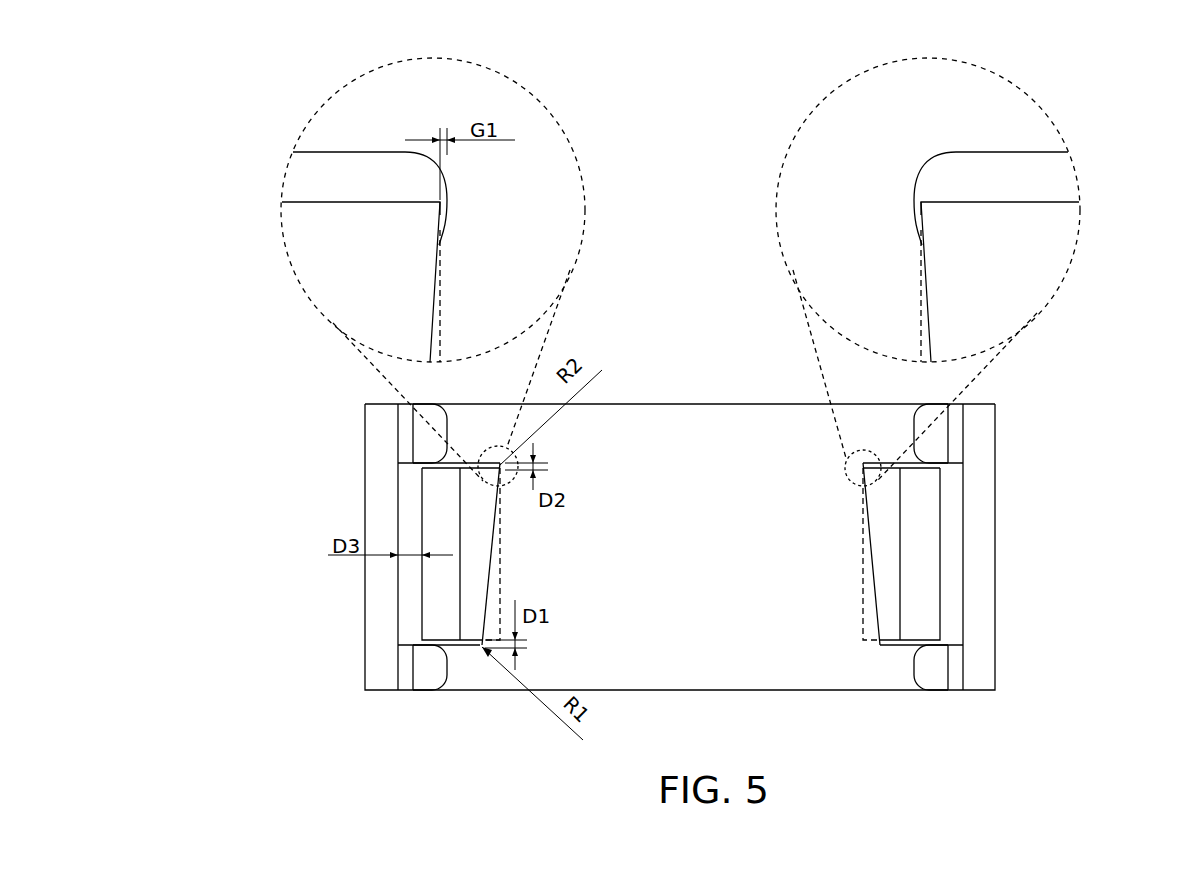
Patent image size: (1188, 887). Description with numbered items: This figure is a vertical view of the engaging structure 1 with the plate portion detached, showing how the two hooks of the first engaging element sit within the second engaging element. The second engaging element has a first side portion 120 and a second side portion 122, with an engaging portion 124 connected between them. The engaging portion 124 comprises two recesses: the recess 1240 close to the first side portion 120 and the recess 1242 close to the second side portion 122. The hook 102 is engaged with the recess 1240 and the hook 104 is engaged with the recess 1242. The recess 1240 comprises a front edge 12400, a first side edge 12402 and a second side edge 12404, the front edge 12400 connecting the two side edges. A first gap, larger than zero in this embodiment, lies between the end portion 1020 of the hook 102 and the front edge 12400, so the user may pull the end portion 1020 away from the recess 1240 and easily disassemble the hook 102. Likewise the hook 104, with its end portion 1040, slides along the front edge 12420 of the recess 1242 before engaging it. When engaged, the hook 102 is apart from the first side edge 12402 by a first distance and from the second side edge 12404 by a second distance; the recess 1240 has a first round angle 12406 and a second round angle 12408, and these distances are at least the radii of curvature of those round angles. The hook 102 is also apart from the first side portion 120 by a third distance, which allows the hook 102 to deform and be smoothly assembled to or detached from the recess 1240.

The engaging structure 1 is at (686, 314).
The hook 102 is at (445, 580).
The end portion 1020 is at (440, 222).
The hook 104 is at (925, 582).
The end portion 1040 is at (920, 218).
The first side portion 120 is at (365, 440).
The second side portion 122 is at (995, 432).
The engaging portion 124 is at (680, 404).
The recess 1240 is at (391, 552).
The recess 1242 is at (945, 547).
The front edge 12400 is at (447, 220).
The first side edge 12402 is at (420, 647).
The second side edge 12404 is at (420, 465).
The first round angle 12406 is at (480, 648).
The second round angle 12408 is at (500, 460).
The front edge 12420 is at (918, 222).